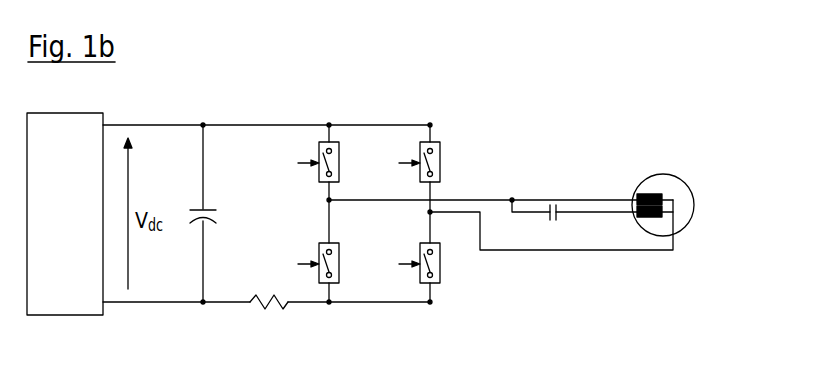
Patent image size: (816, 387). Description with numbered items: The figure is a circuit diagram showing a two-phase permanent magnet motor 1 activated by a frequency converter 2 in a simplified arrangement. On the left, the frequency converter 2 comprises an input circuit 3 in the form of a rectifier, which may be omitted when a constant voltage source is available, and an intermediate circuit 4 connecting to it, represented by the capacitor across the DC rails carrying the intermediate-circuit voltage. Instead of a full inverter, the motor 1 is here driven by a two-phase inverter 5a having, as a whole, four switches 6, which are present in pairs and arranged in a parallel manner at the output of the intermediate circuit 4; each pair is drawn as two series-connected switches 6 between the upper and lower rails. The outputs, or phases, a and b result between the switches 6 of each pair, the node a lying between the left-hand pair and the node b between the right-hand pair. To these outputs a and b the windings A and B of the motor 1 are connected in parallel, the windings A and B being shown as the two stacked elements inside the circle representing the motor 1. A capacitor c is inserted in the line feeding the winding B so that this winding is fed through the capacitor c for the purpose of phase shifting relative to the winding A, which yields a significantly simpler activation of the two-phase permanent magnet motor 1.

The two-phase permanent magnet motor 1 is at (699, 204).
The frequency converter 2 is at (278, 112).
The input circuit 3 is at (71, 179).
The intermediate circuit 4 is at (232, 267).
The two-phase inverter 5a is at (405, 112).
The switches 6 is at (334, 143).
The output (phase) a is at (332, 199).
The output (phase) b is at (433, 210).
The capacitor c is at (554, 203).
The winding A is at (653, 196).
The winding B is at (664, 215).